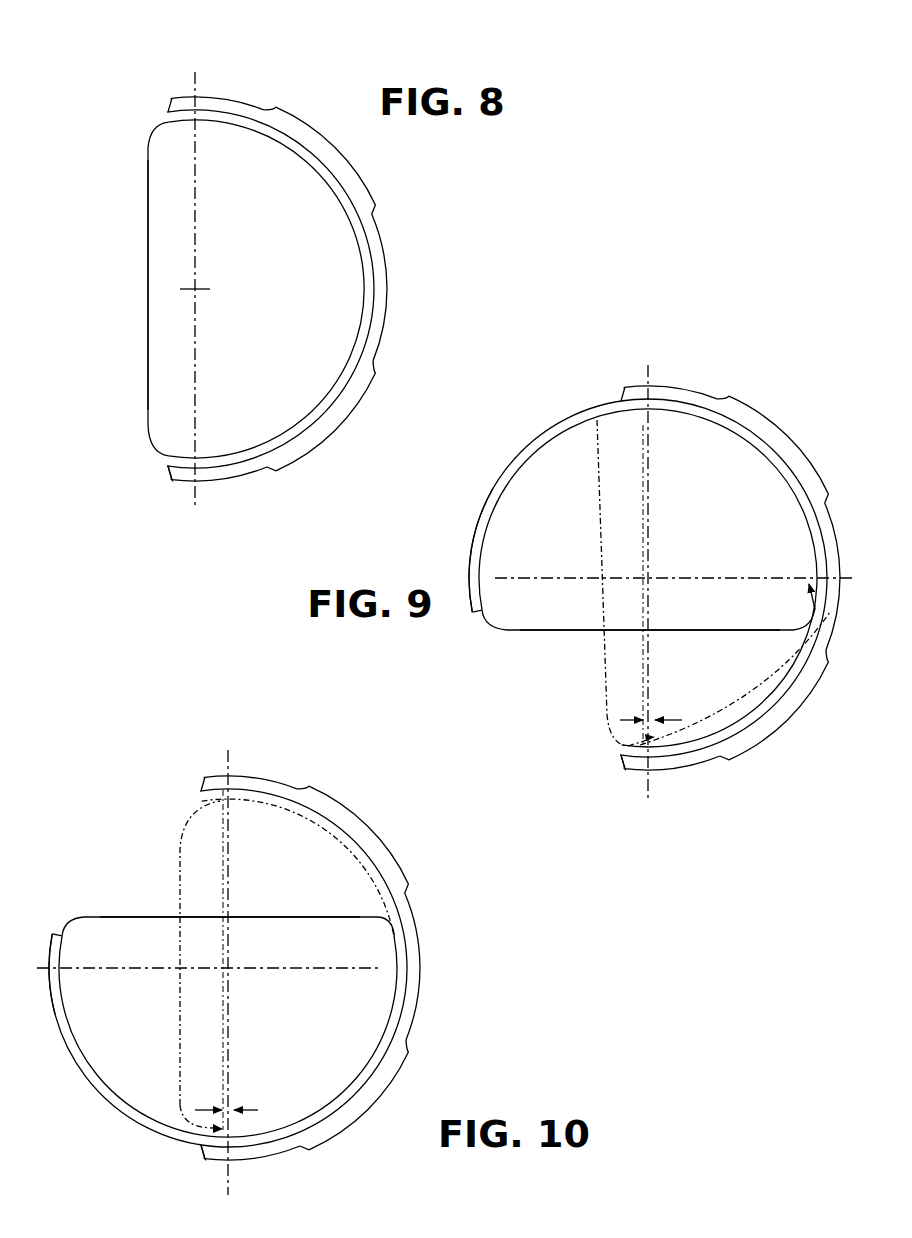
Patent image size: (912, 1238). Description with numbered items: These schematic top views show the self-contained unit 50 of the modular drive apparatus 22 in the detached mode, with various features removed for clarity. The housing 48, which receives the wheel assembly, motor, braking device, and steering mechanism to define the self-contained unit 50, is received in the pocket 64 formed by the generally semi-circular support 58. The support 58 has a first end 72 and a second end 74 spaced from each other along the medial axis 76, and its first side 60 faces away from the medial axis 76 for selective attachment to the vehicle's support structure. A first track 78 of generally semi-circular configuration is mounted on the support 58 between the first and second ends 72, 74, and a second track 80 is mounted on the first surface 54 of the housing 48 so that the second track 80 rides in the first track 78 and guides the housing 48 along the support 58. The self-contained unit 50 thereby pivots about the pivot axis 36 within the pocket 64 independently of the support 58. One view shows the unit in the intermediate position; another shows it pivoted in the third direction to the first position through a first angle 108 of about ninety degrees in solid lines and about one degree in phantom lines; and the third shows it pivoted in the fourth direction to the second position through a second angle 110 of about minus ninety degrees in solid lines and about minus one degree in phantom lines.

In FIG. 8, the modular drive apparatus 22 is at (416, 197).
In FIG. 9, the modular drive apparatus 22 is at (720, 379).
In FIG. 10, the modular drive apparatus 22 is at (453, 944).
In FIG. 8, the pivot axis 36 is at (201, 284).
In FIG. 9, the pivot axis 36 is at (652, 576).
In FIG. 10, the pivot axis 36 is at (232, 967).
In FIG. 8, the housing 48 is at (358, 289).
In FIG. 9, the housing 48 is at (512, 522).
In FIG. 10, the housing 48 is at (182, 847).
In FIG. 8, the self-contained unit 50 is at (124, 306).
In FIG. 9, the self-contained unit 50 is at (481, 631).
In FIG. 10, the self-contained unit 50 is at (127, 832).
In FIG. 8, the first surface 54 is at (284, 165).
In FIG. 9, the first surface 54 is at (545, 477).
In FIG. 10, the first surface 54 is at (96, 946).
In FIG. 8, the support 58 is at (240, 112).
In FIG. 9, the support 58 is at (830, 560).
In FIG. 10, the support 58 is at (408, 910).
In FIG. 8, the first side 60 is at (385, 332).
In FIG. 9, the first side 60 is at (840, 598).
In FIG. 10, the first side 60 is at (422, 978).
In FIG. 8, the pocket 64 is at (123, 155).
In FIG. 9, the pocket 64 is at (508, 649).
In FIG. 10, the pocket 64 is at (144, 893).
In FIG. 8, the first end 72 is at (173, 104).
In FIG. 9, the first end 72 is at (632, 394).
In FIG. 10, the first end 72 is at (212, 783).
In FIG. 8, the second end 74 is at (171, 473).
In FIG. 9, the second end 74 is at (627, 757).
In FIG. 10, the second end 74 is at (206, 1154).
In FIG. 8, the medial axis 76 is at (197, 80).
In FIG. 9, the medial axis 76 is at (652, 372).
In FIG. 10, the medial axis 76 is at (231, 768).
In FIG. 8, the first track 78 is at (224, 474).
In FIG. 9, the first track 78 is at (684, 764).
In FIG. 10, the first track 78 is at (281, 1149).
In FIG. 9, the second track 80 is at (548, 438).
In FIG. 10, the second track 80 is at (51, 995).
In FIG. 9, the first angle 108 is at (788, 657).
In FIG. 10, the second angle 110 is at (89, 1048).